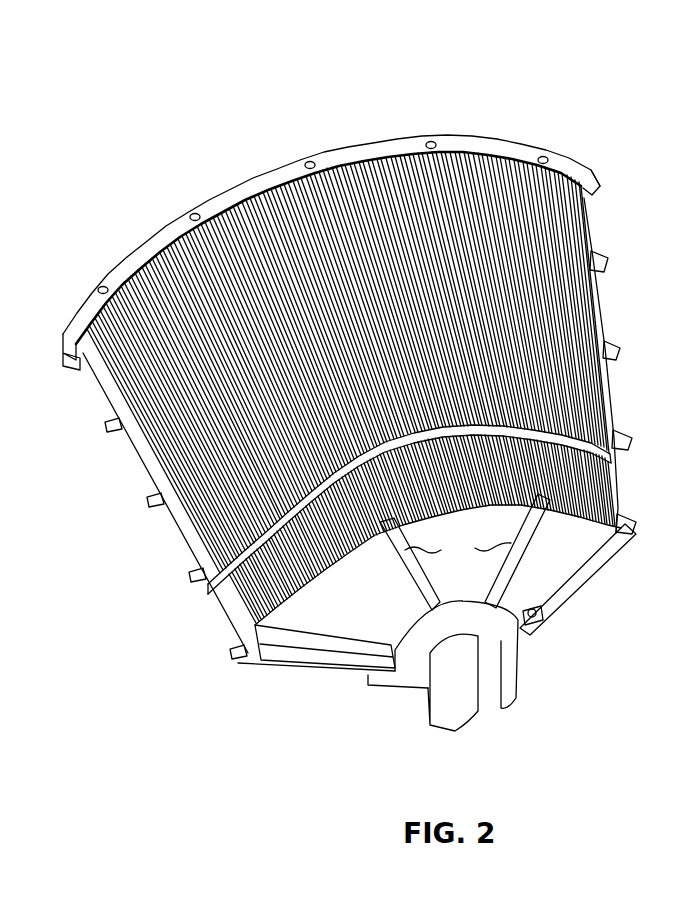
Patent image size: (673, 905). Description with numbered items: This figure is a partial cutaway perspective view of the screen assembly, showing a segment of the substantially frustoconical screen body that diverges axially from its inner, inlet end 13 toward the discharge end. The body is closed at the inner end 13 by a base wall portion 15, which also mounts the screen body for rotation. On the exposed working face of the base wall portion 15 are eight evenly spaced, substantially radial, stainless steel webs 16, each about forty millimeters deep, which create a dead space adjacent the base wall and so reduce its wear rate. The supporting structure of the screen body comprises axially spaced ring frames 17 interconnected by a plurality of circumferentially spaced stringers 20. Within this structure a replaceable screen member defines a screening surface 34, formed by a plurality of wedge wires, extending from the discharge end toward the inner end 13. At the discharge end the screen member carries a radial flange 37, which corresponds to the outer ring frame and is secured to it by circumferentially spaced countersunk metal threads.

The inner, inlet end 13 is at (557, 550).
The base wall portion 15 is at (458, 549).
The webs 16 is at (503, 570).
The ring frames 17 is at (585, 260).
The stringers 20 is at (140, 473).
The screening surface 34 is at (337, 190).
The radial flange 37 is at (392, 140).